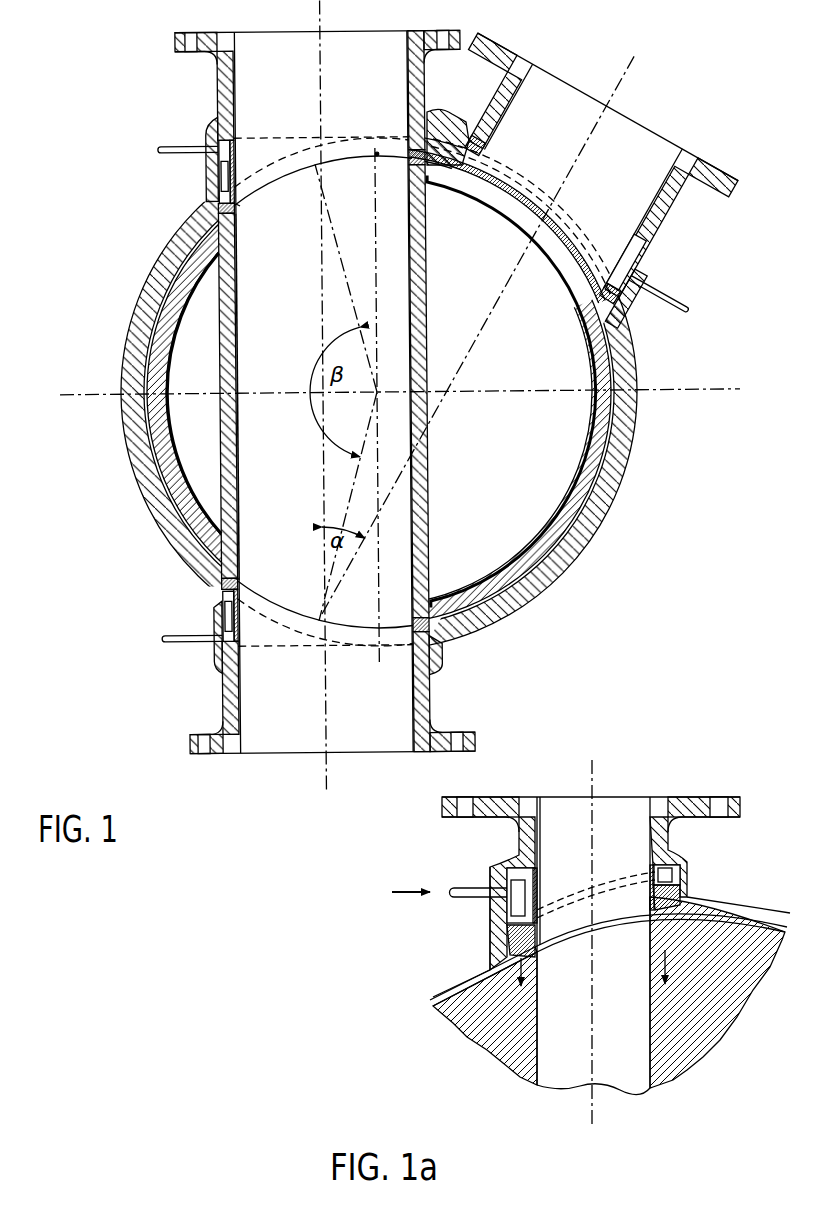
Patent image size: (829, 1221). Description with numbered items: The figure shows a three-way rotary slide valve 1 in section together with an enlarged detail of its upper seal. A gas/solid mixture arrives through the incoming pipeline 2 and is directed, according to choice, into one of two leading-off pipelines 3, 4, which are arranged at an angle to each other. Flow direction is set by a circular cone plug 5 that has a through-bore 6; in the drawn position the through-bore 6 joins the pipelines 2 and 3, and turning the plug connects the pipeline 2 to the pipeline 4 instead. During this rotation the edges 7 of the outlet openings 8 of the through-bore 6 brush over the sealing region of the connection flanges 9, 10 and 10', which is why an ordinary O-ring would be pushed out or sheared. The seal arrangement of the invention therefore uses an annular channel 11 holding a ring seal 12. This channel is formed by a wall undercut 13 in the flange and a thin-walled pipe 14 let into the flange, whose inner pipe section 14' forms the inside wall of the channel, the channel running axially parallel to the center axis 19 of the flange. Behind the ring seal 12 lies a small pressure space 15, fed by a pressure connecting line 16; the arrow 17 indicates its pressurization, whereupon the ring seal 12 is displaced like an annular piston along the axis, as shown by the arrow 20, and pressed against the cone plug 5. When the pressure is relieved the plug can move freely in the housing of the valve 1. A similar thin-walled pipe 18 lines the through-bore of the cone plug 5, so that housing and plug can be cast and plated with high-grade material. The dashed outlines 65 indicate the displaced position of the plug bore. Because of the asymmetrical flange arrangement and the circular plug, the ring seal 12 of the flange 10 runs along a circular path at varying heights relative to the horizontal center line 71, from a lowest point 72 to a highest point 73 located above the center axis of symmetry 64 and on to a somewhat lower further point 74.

In FIG. 1, the three-way rotary slide valve 1 is at (112, 490).
In FIG. 1a, the three-way rotary slide valve 1 is at (611, 907).
In FIG. 1, the incoming pipeline 2 is at (303, 740).
In FIG. 1, the leading-off pipeline 3 is at (357, 67).
In FIG. 1a, the leading-off pipeline 3 is at (641, 835).
In FIG. 1, the leading-off pipeline 4 is at (635, 165).
In FIG. 1, the cone plug 5 is at (154, 376).
In FIG. 1a, the cone plug 5 is at (609, 996).
In FIG. 1, the through-bore 6 is at (236, 462).
In FIG. 1, the edge of outlet opening 7 is at (378, 170).
In FIG. 1, the outlet opening 8 is at (287, 180).
In FIG. 1, the connection flange 9 is at (212, 676).
In FIG. 1, the connection flange 10 is at (165, 128).
In FIG. 1a, the connection flange 10 is at (430, 892).
In FIG. 1, the connection flange 10' is at (689, 275).
In FIG. 1, the annular channel 11 is at (222, 172).
In FIG. 1a, the annular channel 11 is at (510, 910).
In FIG. 1, the ring seal 12 is at (216, 208).
In FIG. 1a, the ring seal 12 is at (508, 944).
In FIG. 1, the wall undercut 13 is at (232, 160).
In FIG. 1a, the wall undercut 13 is at (527, 880).
In FIG. 1, the pipe 14 is at (401, 392).
In FIG. 1a, the pipe 14 is at (593, 942).
In FIG. 1, the inner pipe section 14' is at (379, 370).
In FIG. 1a, the inner pipe section 14' is at (608, 949).
In FIG. 1, the pressure space 15 is at (228, 192).
In FIG. 1a, the pressure space 15 is at (530, 886).
In FIG. 1, the pressure connecting line 16 is at (166, 145).
In FIG. 1a, the pressure connecting line 16 is at (468, 886).
In FIG. 1a, the arrow 17 is at (401, 911).
In FIG. 1, the thin-walled pipe 18 is at (236, 310).
In FIG. 1, the center axis 19 is at (327, 714).
In FIG. 1a, the center axis 19 is at (594, 776).
In FIG. 1a, the arrow 20 is at (522, 975).
In FIG. 1, the center axis of symmetry 64 is at (391, 405).
In FIG. 1, the alternate position of closure member 65 is at (220, 140).
In FIG. 1a, the alternate position of closure member 65 is at (596, 895).
In FIG. 1, the horizontal center line 71 is at (543, 388).
In FIG. 1, the lowest point 72 is at (243, 210).
In FIG. 1, the highest point 73 is at (377, 150).
In FIG. 1, the further point 74 is at (408, 160).